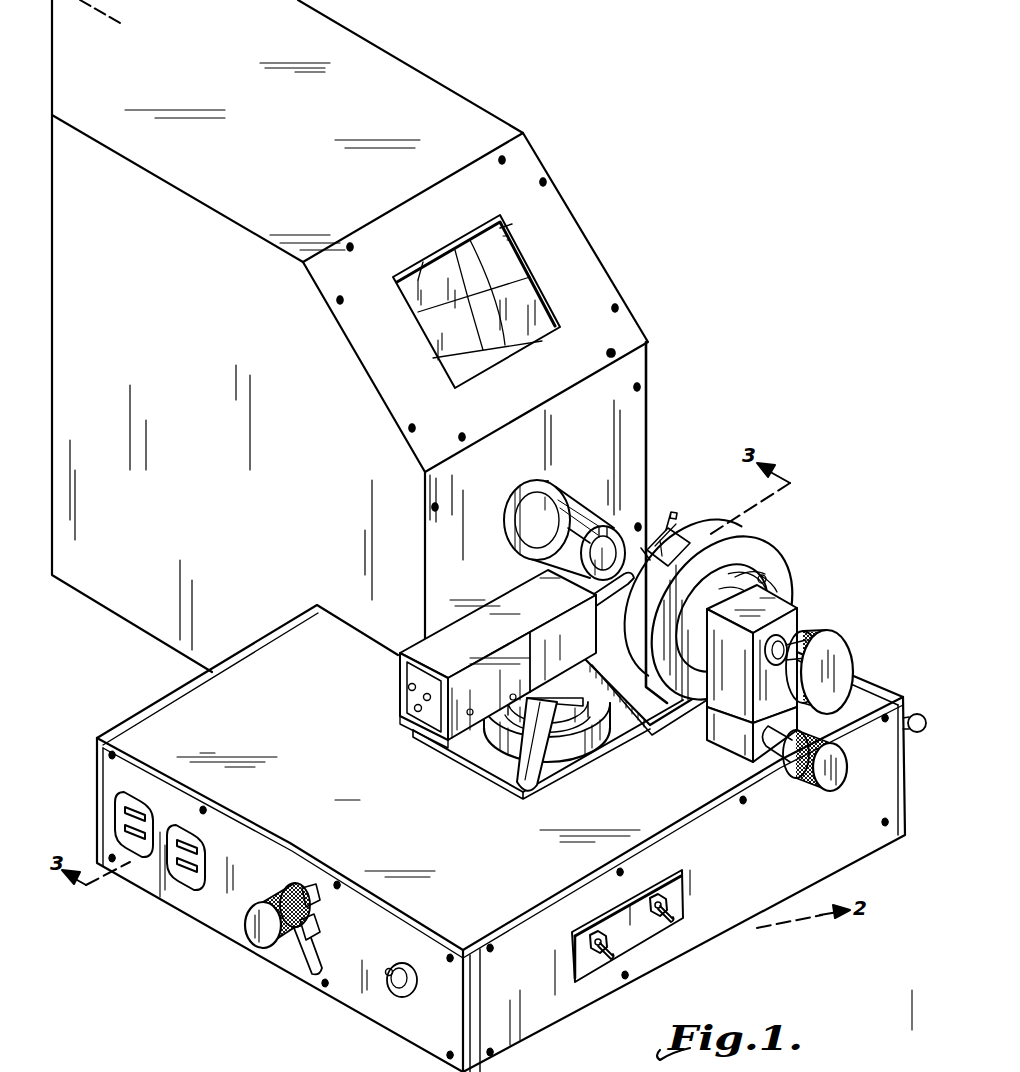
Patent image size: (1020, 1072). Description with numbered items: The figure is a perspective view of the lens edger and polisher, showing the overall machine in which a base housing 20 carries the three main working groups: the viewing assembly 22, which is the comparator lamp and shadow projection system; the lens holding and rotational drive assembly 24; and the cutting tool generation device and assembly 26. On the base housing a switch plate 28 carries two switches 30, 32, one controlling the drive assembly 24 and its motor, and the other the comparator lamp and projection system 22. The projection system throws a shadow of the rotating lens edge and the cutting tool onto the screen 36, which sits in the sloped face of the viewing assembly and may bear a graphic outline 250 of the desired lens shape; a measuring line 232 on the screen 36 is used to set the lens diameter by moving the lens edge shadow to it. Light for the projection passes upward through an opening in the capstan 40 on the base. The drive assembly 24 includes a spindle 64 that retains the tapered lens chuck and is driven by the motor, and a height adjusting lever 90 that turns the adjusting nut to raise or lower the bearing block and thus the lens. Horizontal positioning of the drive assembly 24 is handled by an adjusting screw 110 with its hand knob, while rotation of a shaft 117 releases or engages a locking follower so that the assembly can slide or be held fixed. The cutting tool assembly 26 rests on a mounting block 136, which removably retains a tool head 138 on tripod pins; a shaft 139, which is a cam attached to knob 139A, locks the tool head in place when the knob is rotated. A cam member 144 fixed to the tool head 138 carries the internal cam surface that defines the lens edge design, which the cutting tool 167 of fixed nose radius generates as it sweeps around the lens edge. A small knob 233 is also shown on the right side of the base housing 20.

The base housing 20 is at (866, 661).
The viewing assembly 22 is at (657, 332).
The drive assembly 24 is at (398, 660).
The cutting tool generation device and assembly 26 is at (731, 610).
The switch plate 28 is at (684, 880).
The switch 30 is at (597, 968).
The switch 32 is at (670, 911).
The screen 36 is at (576, 281).
The capstan 40 is at (665, 692).
The spindle 64 is at (618, 600).
The height adjusting lever 90 is at (513, 773).
The adjusting screw 110 is at (303, 892).
The shaft 117 is at (318, 936).
The mounting block 136 is at (737, 738).
The tool head 138 is at (790, 620).
The shaft 139 is at (785, 727).
The knob 139A is at (836, 784).
The cam member 144 is at (781, 584).
The cutting tool 167 is at (500, 224).
The measuring line 232 is at (500, 259).
The side knob 233 is at (918, 713).
The graphic outline 250 is at (437, 350).